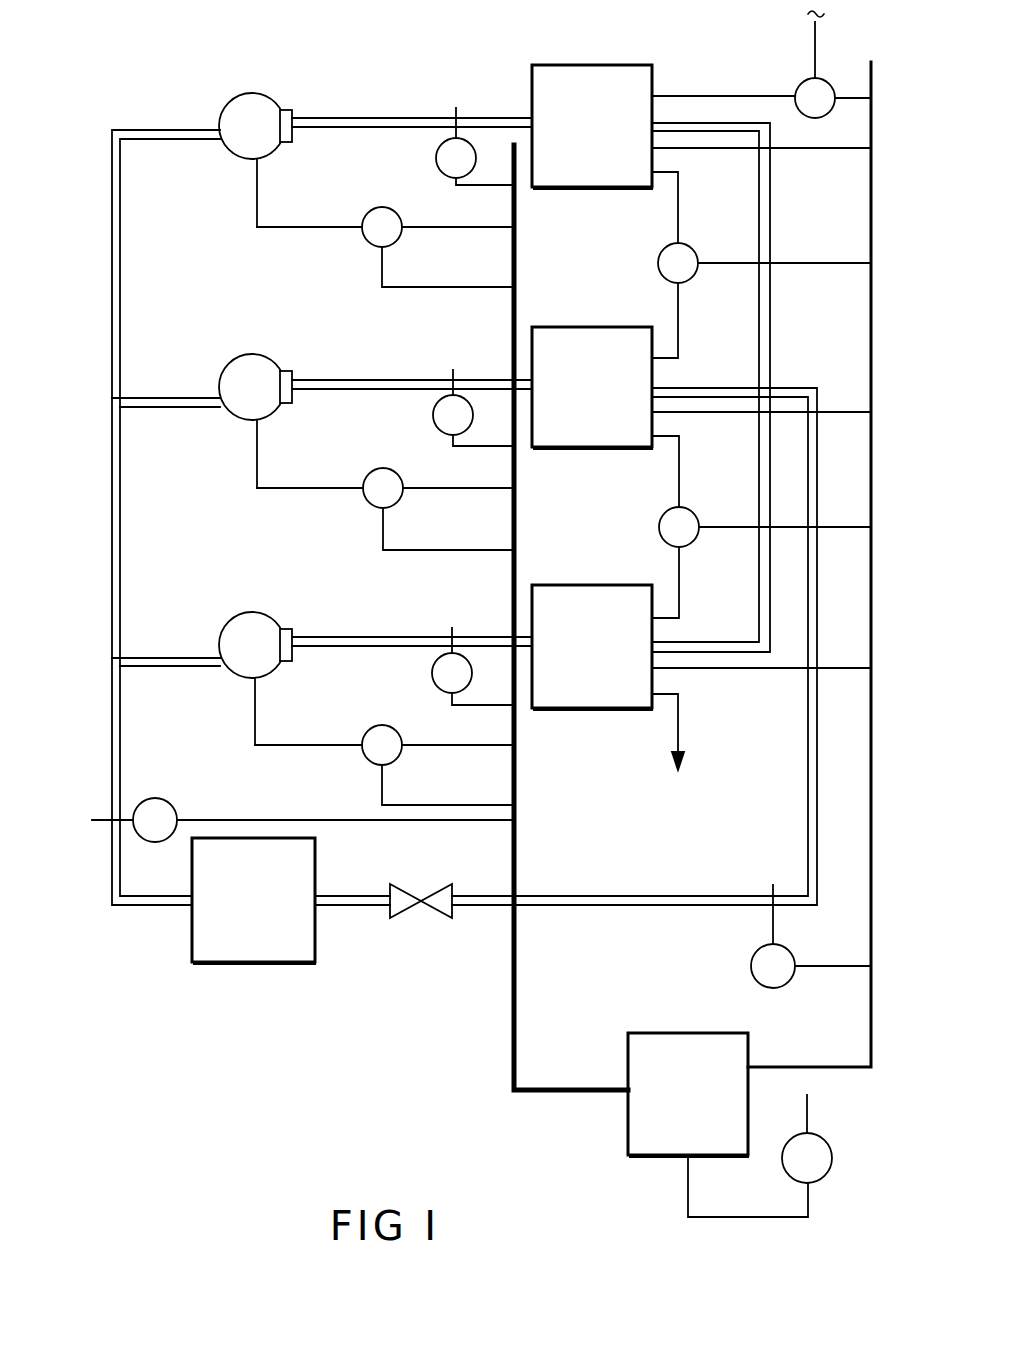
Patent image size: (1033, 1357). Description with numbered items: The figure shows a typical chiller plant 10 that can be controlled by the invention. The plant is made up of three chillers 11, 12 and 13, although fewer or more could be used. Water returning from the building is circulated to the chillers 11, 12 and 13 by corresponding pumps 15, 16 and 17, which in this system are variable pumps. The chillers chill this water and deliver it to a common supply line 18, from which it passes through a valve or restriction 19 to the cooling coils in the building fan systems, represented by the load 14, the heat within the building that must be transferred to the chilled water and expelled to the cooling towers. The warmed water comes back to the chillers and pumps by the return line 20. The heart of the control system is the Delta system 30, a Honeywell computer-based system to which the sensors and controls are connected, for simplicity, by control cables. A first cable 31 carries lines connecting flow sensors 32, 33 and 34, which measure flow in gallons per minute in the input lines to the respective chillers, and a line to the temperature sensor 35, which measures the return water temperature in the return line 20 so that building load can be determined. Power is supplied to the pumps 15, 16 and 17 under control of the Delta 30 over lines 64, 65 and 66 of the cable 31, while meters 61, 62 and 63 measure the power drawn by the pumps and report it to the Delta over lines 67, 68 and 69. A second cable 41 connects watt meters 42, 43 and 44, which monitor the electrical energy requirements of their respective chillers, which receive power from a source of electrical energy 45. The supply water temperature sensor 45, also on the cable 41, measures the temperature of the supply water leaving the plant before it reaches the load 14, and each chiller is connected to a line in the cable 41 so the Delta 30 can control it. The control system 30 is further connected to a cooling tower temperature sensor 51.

The chiller plant 10 is at (436, 52).
The chiller 11 is at (572, 188).
The chiller 12 is at (585, 448).
The chiller 13 is at (572, 709).
The load 14 is at (232, 962).
The pump 15 is at (245, 98).
The pump 16 is at (247, 360).
The pump 17 is at (245, 615).
The common supply line 18 is at (792, 386).
The valve or restriction 19 is at (421, 905).
The return line 20 is at (110, 895).
The Delta system 30 is at (672, 1033).
The first cable 31 is at (513, 1030).
The flow sensor 32 is at (436, 156).
The flow sensor 33 is at (433, 415).
The flow sensor 34 is at (432, 673).
The temperature sensor 35 is at (165, 800).
The second cable 41 is at (871, 1018).
The watt meter 42 is at (820, 117).
The watt meter 43 is at (690, 280).
The watt meter 44 is at (692, 545).
The supply water temperature sensor 45 is at (795, 950).
The cooling tower temperature sensor 51 is at (830, 1148).
The meter 61 is at (370, 210).
The meter 62 is at (373, 473).
The meter 63 is at (371, 728).
The line 64 is at (447, 226).
The line 65 is at (432, 488).
The line 66 is at (468, 745).
The line 67 is at (421, 290).
The line 68 is at (425, 553).
The line 69 is at (458, 805).